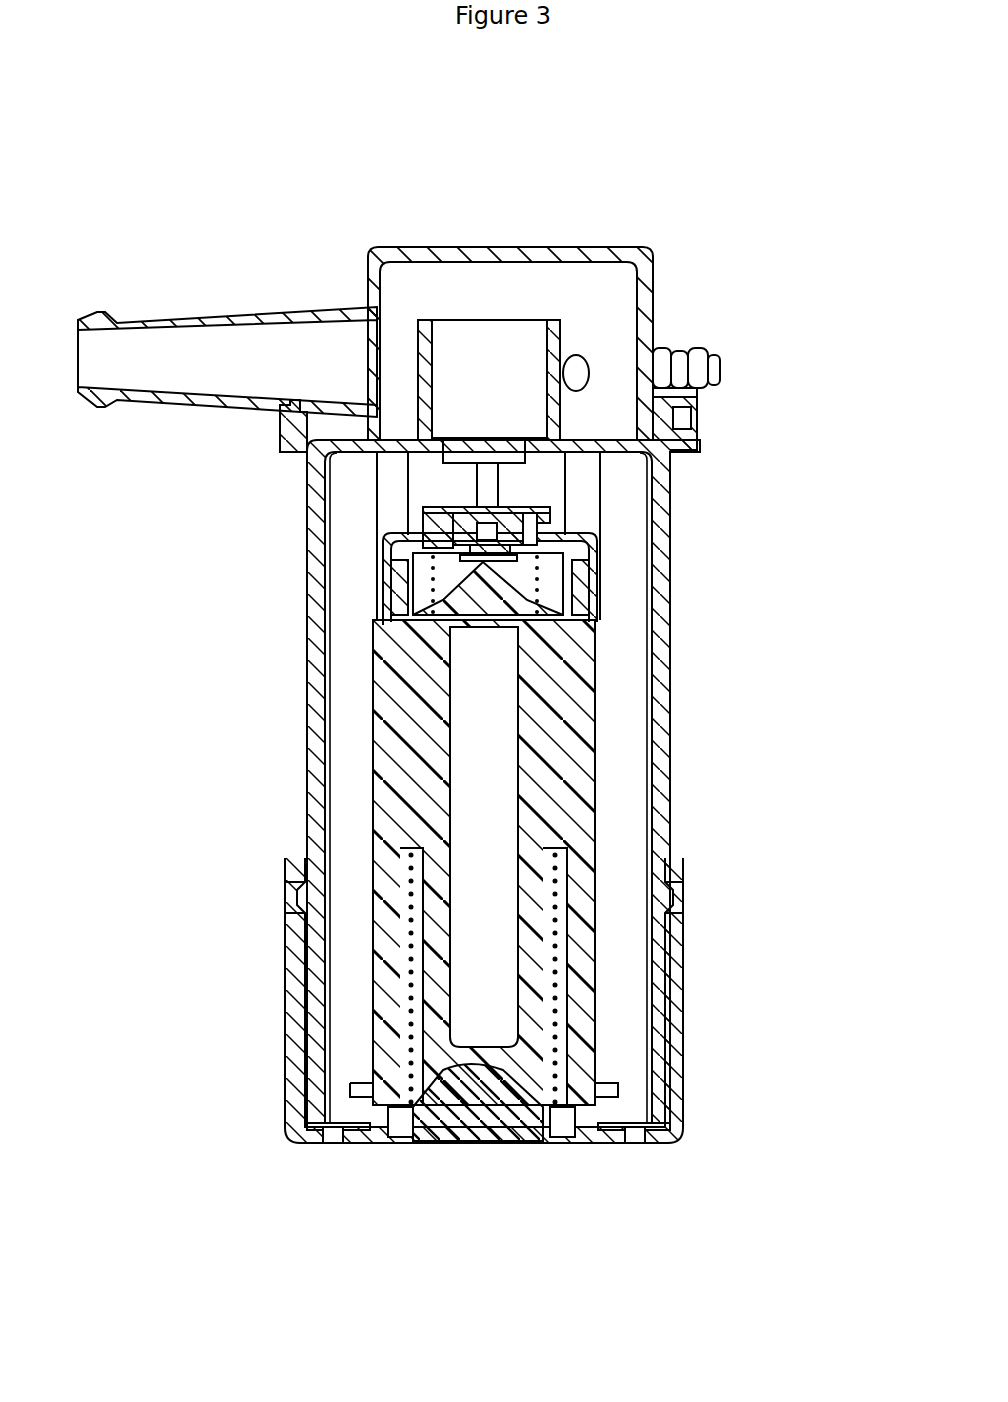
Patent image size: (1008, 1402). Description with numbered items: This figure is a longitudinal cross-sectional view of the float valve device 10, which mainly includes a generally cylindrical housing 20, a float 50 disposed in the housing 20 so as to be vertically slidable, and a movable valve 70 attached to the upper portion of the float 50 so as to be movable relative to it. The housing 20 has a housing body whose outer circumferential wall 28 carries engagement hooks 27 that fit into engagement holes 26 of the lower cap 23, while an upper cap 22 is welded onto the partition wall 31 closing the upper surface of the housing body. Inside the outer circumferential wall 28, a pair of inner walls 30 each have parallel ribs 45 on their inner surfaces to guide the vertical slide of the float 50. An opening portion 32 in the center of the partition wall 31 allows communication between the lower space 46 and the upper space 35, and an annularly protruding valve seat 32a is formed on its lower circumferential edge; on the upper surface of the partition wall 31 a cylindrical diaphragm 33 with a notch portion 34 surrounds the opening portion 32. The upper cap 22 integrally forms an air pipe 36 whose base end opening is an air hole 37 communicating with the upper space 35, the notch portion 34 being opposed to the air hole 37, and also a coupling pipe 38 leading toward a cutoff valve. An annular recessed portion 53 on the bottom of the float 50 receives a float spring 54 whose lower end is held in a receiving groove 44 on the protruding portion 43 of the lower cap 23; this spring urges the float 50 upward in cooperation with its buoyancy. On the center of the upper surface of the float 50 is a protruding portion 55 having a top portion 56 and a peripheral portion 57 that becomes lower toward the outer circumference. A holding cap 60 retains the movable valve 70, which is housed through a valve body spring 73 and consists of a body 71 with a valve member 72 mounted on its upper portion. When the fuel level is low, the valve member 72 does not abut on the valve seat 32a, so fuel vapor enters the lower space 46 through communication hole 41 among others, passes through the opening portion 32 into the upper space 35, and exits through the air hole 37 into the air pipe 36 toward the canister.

The float valve device 10 is at (437, 655).
The housing 20 is at (437, 655).
The upper cap 22 is at (432, 361).
The lower cap 23 is at (440, 986).
The engagement holes 26 is at (297, 908).
The engagement hooks 27 is at (297, 878).
The outer circumferential wall 28 is at (307, 723).
The inner walls 30 is at (550, 470).
The partition wall 31 is at (368, 416).
The opening portion 32 is at (484, 440).
The valve seat 32a is at (377, 458).
The cylindrical diaphragm 33 is at (418, 336).
The notch portion 34 is at (552, 338).
The upper space 35 is at (612, 299).
The air pipe 36 is at (237, 312).
The air hole 37 is at (378, 348).
The coupling pipe 38 is at (695, 350).
The communication hole 41 is at (325, 1143).
The protruding portion 43 is at (440, 1100).
The receiving groove 44 is at (400, 1120).
The parallel ribs 45 is at (390, 498).
The lower space 46 is at (344, 629).
The float 50 is at (571, 874).
The annular recessed portion 53 is at (572, 868).
The float spring 54 is at (555, 1000).
The protruding portion 55 is at (589, 594).
The top portion 56 is at (575, 608).
The peripheral portion 57 is at (583, 575).
The holding cap 60 is at (540, 550).
The movable valve 70 is at (340, 567).
The body 71 is at (470, 570).
The valve member 72 is at (470, 520).
The valve body spring 73 is at (374, 621).